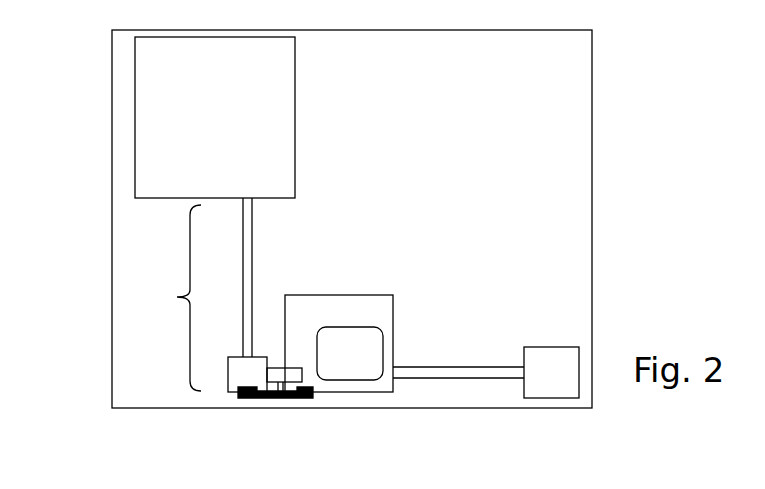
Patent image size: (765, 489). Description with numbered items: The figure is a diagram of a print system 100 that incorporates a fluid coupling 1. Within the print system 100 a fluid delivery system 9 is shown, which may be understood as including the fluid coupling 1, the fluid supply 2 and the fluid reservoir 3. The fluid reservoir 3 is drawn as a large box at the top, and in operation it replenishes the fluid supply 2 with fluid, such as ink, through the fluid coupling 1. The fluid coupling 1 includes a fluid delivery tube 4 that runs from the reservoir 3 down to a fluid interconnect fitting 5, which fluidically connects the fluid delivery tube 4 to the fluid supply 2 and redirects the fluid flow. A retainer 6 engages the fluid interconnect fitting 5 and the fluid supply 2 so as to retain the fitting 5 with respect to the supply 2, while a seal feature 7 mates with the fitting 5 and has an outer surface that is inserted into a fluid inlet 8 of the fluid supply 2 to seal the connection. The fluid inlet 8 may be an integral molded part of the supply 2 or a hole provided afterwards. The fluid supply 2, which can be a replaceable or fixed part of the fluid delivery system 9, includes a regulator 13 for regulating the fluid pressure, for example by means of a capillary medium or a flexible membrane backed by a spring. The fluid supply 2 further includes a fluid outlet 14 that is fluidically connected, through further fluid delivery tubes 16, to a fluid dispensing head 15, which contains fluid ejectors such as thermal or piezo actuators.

The print system 100 is at (592, 170).
The fluid coupling 1 is at (177, 297).
The fluid supply 2 is at (393, 320).
The fluid reservoir 3 is at (295, 116).
The fluid delivery tube 4 is at (253, 232).
The fluid interconnect fitting 5 is at (228, 390).
The retainer 6 is at (248, 398).
The seal feature 7 is at (278, 399).
The fluid inlet 8 is at (279, 367).
The fluid delivery system 9 is at (366, 188).
The regulator 13 is at (367, 368).
The fluid outlet 14 is at (398, 386).
The fluid dispensing head 15 is at (568, 388).
The further fluid delivery tubes 16 is at (462, 378).